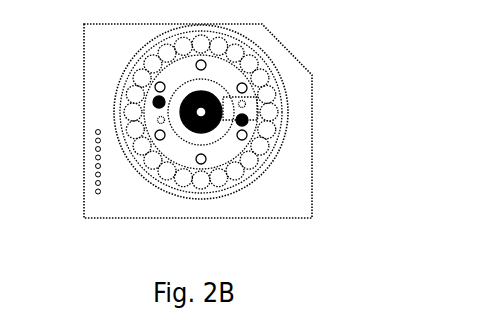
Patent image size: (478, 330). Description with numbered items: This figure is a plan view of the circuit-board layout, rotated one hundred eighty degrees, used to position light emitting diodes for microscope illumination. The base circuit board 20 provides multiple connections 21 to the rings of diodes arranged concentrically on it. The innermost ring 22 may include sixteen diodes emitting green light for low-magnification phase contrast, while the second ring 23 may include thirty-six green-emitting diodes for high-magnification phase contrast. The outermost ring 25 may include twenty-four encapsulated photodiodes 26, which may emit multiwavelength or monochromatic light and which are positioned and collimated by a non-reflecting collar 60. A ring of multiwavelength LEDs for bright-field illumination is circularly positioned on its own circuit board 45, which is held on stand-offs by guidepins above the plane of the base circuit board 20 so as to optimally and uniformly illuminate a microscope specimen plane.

The base circuit board 20 is at (97, 207).
The connections 21 is at (98, 128).
The innermost ring 22 is at (225, 97).
The second ring 23 is at (242, 120).
The outermost ring 25 is at (243, 178).
The encapsulated photodiodes 26 is at (258, 144).
The circuit board 45 is at (157, 102).
The non-reflecting collar 60 is at (138, 65).